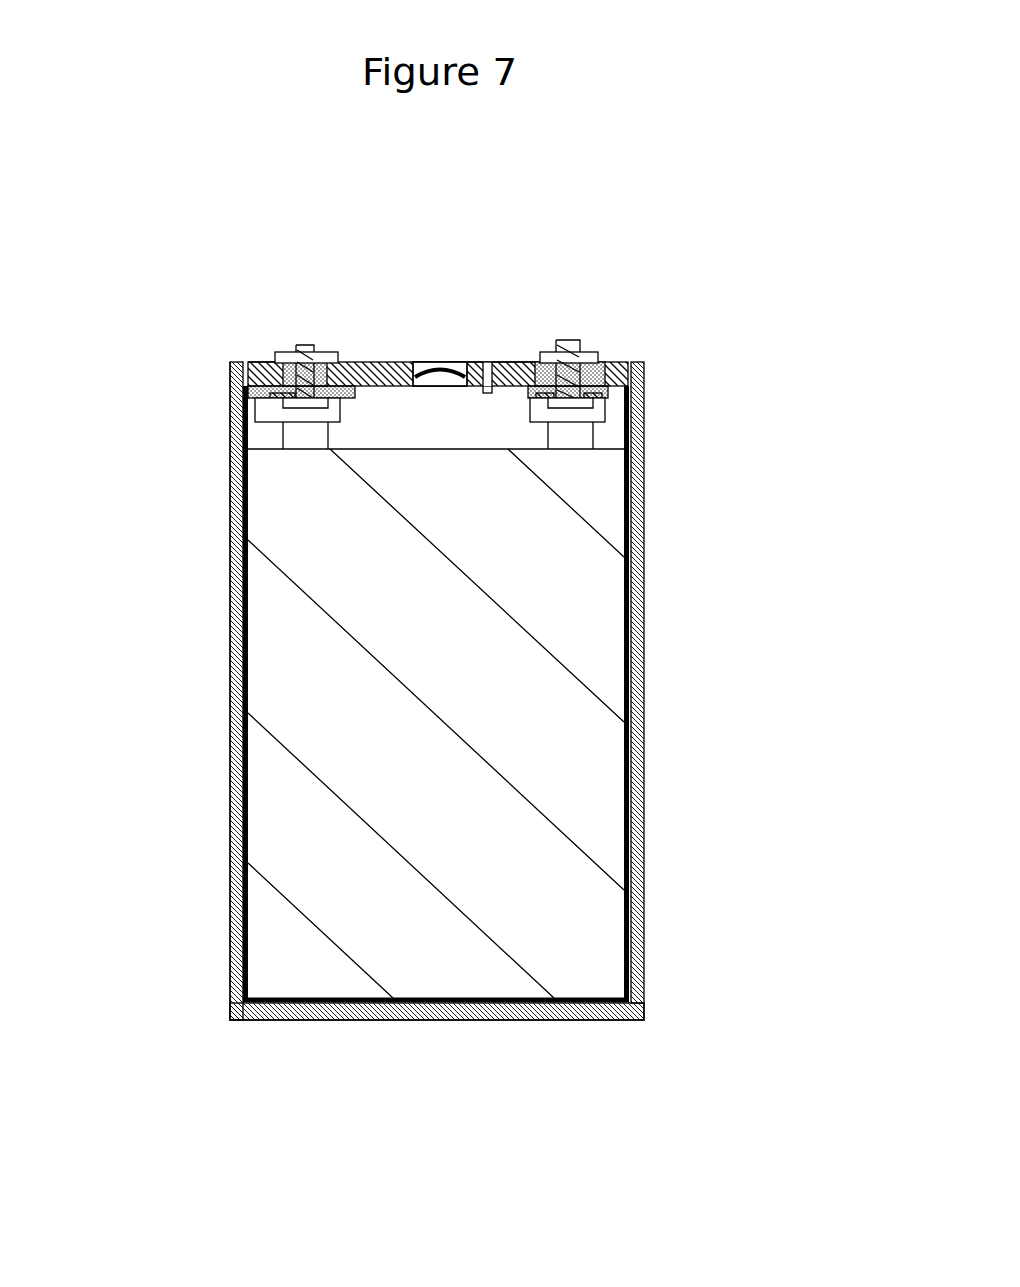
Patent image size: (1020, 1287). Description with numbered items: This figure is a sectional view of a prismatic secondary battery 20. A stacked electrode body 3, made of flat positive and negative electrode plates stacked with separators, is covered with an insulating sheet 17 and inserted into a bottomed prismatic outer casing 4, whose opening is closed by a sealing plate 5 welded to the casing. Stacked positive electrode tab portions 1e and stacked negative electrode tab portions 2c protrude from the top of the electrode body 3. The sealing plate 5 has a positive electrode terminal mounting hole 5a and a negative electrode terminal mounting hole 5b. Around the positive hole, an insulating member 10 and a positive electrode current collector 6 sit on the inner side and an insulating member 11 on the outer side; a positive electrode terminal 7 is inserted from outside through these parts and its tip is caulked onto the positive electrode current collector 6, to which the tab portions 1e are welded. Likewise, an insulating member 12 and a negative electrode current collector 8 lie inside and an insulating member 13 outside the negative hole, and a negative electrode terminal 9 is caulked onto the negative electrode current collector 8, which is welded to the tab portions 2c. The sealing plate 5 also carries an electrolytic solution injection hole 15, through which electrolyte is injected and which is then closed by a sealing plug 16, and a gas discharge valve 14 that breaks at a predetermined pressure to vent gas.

The prismatic secondary battery 20 is at (137, 197).
The outer casing 4 is at (357, 1006).
The insulating sheet 17 is at (630, 927).
The stacked electrode body 3 is at (537, 885).
The sealing plate 5 is at (623, 362).
The insulating member 11 is at (265, 362).
The gas discharge valve 14 is at (415, 362).
The sealing plug 16 is at (480, 362).
The electrolytic solution injection hole 15 is at (487, 362).
The positive electrode terminal mounting hole 5a is at (313, 358).
The positive electrode terminal 7 is at (288, 348).
The insulating member 10 is at (268, 390).
The positive electrode current collector 6 is at (276, 409).
The positive electrode tab portion 1e is at (305, 430).
The negative electrode terminal mounting hole 5b is at (532, 357).
The insulating member 13 is at (597, 357).
The negative electrode terminal 9 is at (563, 340).
The insulating member 12 is at (630, 385).
The negative electrode current collector 8 is at (598, 404).
The negative electrode tab portion 2c is at (580, 438).